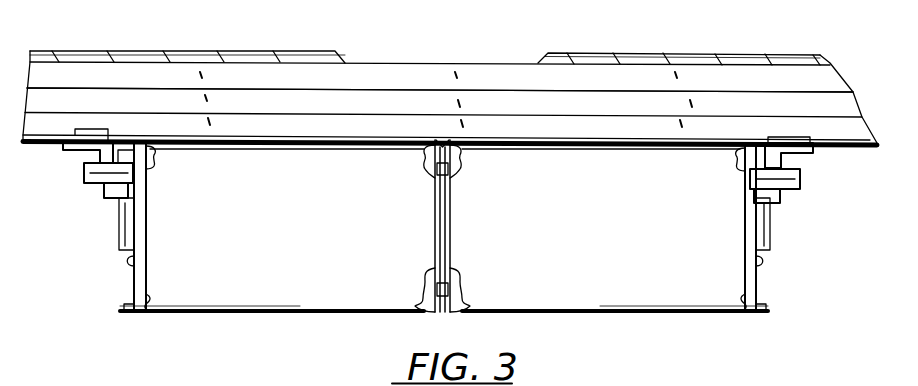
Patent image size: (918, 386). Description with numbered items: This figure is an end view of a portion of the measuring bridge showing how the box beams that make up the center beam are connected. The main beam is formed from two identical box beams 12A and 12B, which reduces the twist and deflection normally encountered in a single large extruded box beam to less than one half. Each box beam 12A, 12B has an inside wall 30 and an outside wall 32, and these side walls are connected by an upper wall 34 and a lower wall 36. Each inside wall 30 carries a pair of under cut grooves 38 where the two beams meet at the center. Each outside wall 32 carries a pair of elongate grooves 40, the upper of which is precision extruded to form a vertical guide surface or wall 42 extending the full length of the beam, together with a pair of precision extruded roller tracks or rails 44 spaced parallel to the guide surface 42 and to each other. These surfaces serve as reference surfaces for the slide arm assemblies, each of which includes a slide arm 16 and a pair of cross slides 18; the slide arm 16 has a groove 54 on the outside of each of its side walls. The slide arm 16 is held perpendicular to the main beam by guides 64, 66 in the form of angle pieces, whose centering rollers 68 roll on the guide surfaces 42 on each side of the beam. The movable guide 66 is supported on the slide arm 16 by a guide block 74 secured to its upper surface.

The box beam 12A is at (678, 318).
The box beam 12B is at (226, 313).
The slide arm 16 is at (487, 37).
The cross slide 18 is at (247, 20).
The inside wall 30 is at (436, 214).
The outside wall 32 is at (140, 249).
The upper wall 34 is at (297, 150).
The lower wall 36 is at (320, 309).
The under cut groove 38 is at (434, 168).
The elongate groove 40 is at (138, 195).
The guide surface 42 is at (140, 173).
The roller track 44 is at (118, 190).
The groove 54 is at (358, 98).
The guide 64 is at (812, 154).
The movable guide 66 is at (84, 152).
The centering roller 68 is at (86, 172).
The guide block 74 is at (100, 128).